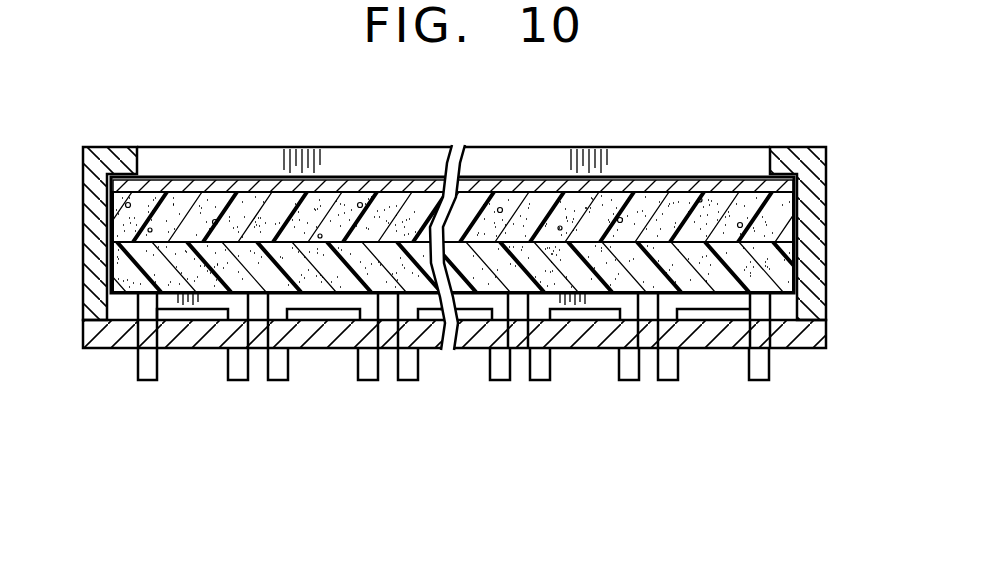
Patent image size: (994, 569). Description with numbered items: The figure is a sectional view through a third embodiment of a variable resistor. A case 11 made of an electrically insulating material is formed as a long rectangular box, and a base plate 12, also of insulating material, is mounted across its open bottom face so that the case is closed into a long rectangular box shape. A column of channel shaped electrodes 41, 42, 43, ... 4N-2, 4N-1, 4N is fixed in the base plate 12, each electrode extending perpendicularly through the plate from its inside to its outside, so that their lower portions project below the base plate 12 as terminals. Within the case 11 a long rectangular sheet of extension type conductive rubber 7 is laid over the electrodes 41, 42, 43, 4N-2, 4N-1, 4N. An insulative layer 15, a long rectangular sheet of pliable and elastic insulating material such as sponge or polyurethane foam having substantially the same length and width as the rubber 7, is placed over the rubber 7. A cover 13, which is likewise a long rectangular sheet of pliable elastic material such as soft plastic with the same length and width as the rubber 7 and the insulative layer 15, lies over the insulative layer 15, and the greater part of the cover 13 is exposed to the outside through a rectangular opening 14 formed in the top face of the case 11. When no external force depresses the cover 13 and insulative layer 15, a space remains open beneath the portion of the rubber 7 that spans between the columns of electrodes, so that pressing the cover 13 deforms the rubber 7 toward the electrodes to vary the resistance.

The case 11 is at (100, 148).
The base plate 12 is at (107, 348).
The cover 13 is at (642, 187).
The rectangular opening 14 is at (138, 158).
The insulative layer 15 is at (777, 214).
The extension type conductive rubber 7 is at (777, 272).
The channel shaped electrode 41 is at (147, 378).
The channel shaped electrode 42 is at (277, 378).
The channel shaped electrode 43 is at (410, 378).
The channel shaped electrode 4N-2 is at (503, 380).
The channel shaped electrode 4N-1 is at (630, 382).
The channel shaped electrode 4N is at (758, 382).